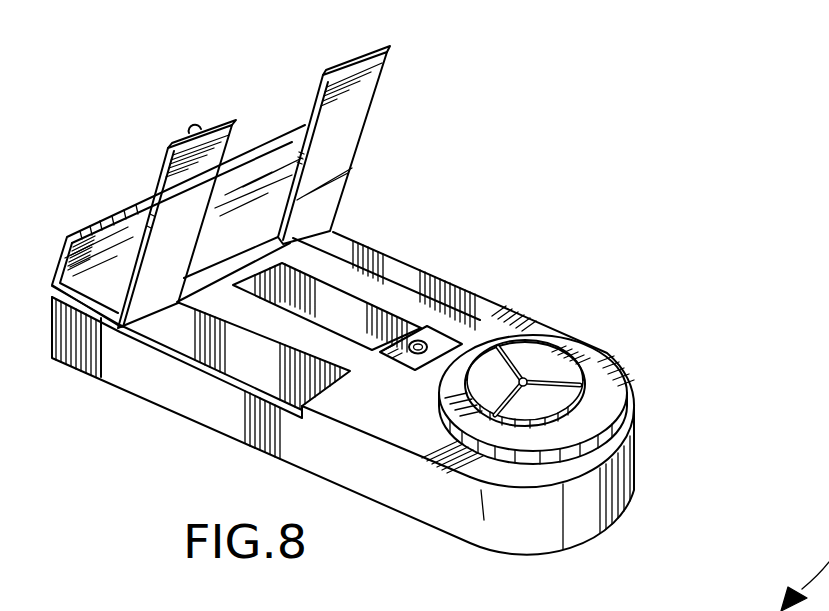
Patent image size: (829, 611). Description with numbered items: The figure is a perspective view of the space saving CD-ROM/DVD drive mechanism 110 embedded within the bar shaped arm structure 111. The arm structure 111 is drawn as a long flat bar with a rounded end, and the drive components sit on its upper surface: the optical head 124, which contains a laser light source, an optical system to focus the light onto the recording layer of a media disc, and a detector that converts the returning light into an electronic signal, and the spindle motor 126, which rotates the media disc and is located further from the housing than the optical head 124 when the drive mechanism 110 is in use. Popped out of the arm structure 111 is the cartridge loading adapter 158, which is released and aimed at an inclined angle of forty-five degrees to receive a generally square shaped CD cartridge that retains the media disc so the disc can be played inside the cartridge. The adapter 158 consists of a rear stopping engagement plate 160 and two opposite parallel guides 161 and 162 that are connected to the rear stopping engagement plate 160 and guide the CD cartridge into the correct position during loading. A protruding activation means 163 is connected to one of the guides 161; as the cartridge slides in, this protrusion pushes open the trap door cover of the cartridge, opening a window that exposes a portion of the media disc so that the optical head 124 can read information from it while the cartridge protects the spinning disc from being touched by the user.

The CD-ROM/DVD drive mechanism 110 is at (578, 100).
The bar shaped arm structure 111 is at (530, 312).
The optical head 124 is at (421, 338).
The spindle motor 126 is at (605, 350).
The cartridge loading adapter 158 is at (266, 103).
The rear stopping engagement plate 160 is at (83, 227).
The guide 161 is at (160, 165).
The guide 162 is at (354, 127).
The protruding activation means 163 is at (191, 128).